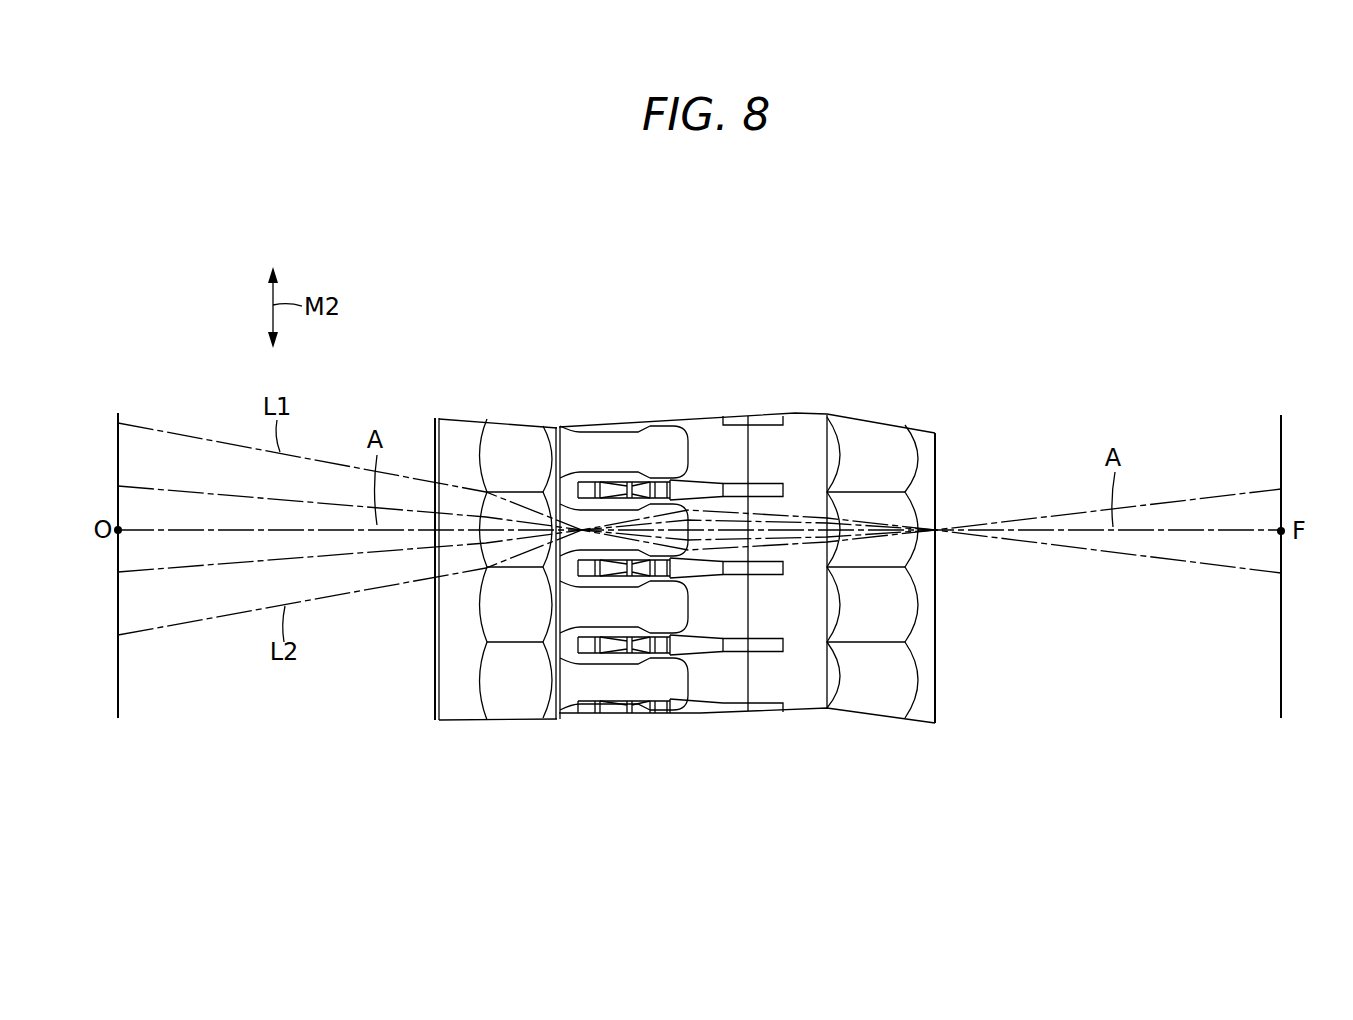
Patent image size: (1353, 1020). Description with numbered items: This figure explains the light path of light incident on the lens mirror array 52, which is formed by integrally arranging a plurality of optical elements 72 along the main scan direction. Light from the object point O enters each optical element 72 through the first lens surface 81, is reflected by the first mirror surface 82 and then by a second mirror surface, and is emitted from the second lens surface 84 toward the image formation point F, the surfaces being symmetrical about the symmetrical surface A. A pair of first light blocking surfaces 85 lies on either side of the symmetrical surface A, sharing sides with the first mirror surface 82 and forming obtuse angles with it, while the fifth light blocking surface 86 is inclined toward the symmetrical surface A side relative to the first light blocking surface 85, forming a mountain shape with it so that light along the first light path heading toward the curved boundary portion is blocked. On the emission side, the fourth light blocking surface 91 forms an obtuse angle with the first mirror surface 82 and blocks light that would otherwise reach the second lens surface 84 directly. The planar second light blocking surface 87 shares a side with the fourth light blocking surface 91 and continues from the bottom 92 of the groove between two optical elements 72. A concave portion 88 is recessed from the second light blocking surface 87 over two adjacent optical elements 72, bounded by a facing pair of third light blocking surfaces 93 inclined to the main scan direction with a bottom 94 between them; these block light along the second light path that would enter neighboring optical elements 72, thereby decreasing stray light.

The lens mirror array 52 is at (613, 240).
The optical element 72 is at (950, 460).
The first lens surface 81 is at (505, 692).
The first mirror surface 82 is at (570, 686).
The second lens surface 84 is at (880, 692).
The first light blocking surface 85 is at (607, 716).
The fifth light blocking surface 86 is at (650, 716).
The second light blocking surface 87 is at (722, 686).
The concave portion 88 is at (763, 648).
The fourth light blocking surface 91 is at (688, 684).
The bottom of the groove 92 is at (613, 490).
The third light blocking surface 93 is at (733, 497).
The bottom 94 is at (698, 490).